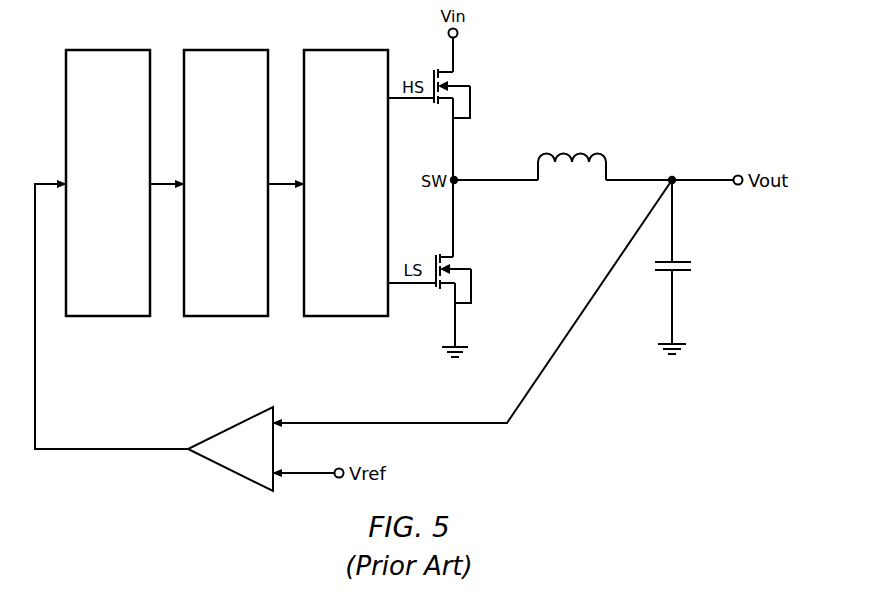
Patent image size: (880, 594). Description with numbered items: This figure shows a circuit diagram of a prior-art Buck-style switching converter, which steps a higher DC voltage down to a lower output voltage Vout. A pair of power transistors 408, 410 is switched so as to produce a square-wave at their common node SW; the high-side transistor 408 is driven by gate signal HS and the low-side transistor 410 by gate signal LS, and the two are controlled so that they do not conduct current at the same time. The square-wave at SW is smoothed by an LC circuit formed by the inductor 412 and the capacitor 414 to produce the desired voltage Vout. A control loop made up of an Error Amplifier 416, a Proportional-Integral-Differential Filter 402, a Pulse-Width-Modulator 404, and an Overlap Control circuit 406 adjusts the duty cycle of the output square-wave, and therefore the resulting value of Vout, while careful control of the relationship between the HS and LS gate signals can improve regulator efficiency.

The Proportional-Integral-Differential (PID) Filter 402 is at (95, 307).
The Pulse-Width-Modulator (PWM) 404 is at (213, 307).
The Overlap Control circuit 406 is at (333, 307).
The power transistor 408 is at (463, 73).
The power transistor 410 is at (465, 258).
The inductor 412 is at (572, 153).
The capacitor 414 is at (681, 262).
The Error Amplifier 416 is at (248, 414).